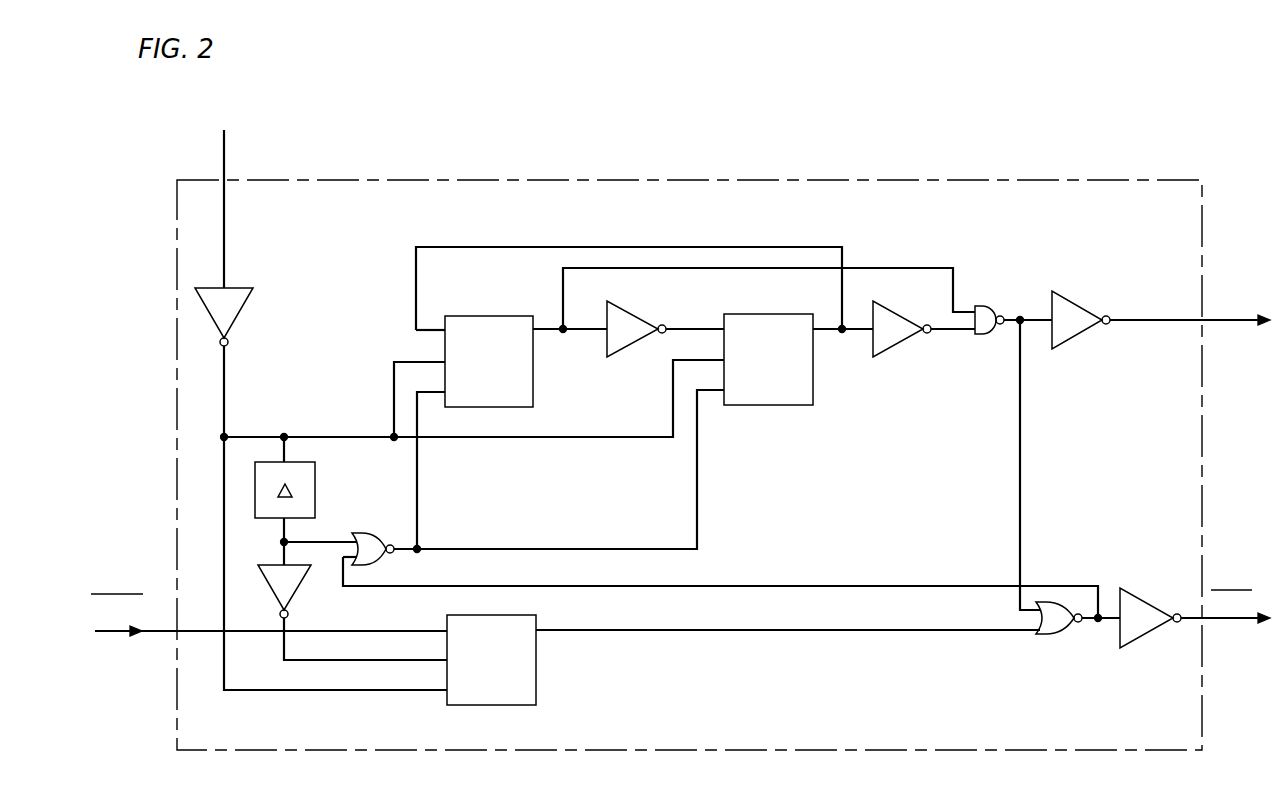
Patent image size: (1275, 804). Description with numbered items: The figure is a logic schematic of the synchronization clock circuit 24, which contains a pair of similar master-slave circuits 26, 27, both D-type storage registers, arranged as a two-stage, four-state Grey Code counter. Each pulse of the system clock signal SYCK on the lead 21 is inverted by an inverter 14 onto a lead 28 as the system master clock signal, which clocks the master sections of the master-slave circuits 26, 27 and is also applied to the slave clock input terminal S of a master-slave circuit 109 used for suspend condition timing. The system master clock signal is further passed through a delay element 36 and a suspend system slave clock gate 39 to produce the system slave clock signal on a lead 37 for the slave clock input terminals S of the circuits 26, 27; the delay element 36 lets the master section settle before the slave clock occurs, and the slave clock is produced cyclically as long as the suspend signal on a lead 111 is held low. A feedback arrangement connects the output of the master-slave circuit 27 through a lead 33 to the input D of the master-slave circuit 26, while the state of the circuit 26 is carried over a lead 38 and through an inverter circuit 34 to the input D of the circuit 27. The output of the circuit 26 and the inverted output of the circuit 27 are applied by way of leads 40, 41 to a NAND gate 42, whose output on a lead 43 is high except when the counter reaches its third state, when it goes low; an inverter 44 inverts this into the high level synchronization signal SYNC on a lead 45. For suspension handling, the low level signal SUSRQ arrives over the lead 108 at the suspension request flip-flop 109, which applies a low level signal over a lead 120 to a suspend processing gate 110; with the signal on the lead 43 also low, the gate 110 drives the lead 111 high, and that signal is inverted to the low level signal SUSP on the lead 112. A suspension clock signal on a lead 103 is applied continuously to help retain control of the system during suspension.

The inverter 14 is at (243, 305).
The lead 21 is at (226, 150).
The synchronization clock circuit 24 is at (905, 180).
The master-slave circuit 26 is at (474, 316).
The master-slave circuit 27 is at (757, 314).
The lead 28 is at (226, 384).
The lead 33 is at (414, 274).
The inverter circuit 34 is at (626, 290).
The delay element 36 is at (316, 466).
The lead 37 is at (396, 556).
The lead 38 is at (545, 333).
The suspend system slave clock gate 39 is at (368, 535).
The lead 40 is at (888, 268).
The lead 41 is at (965, 331).
The NAND gate 42 is at (978, 304).
The lead 43 is at (1022, 426).
The inverter 44 is at (1076, 296).
The lead 45 is at (1220, 322).
The lead 103 is at (344, 644).
The lead 108 is at (138, 646).
The suspension request flip-flop 109 is at (536, 681).
The suspend processing gate 110 is at (1058, 636).
The lead 111 is at (898, 586).
The lead 112 is at (1242, 622).
The lead 120 is at (898, 630).